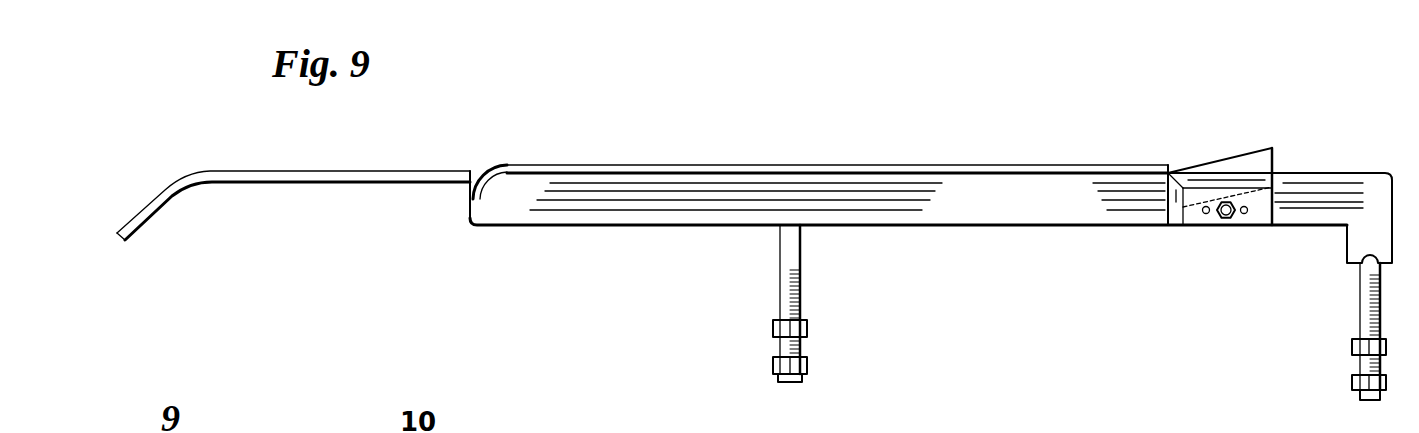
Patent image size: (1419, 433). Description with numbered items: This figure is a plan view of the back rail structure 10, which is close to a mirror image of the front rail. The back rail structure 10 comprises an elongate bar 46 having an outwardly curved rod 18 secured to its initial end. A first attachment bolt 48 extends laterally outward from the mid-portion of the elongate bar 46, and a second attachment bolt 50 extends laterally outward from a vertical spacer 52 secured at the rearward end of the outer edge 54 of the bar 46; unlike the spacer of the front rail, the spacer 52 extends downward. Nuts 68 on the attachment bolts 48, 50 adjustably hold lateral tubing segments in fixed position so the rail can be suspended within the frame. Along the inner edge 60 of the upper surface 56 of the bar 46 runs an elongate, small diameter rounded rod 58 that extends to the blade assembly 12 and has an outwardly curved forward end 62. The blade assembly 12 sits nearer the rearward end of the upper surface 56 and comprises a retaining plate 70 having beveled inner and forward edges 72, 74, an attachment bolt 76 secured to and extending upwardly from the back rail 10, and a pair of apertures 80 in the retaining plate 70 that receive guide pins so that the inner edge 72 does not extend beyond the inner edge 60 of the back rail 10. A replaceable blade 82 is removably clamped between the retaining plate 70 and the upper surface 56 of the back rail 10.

The back rail structure 10 is at (1003, 153).
The blade assembly 12 is at (1258, 197).
The outwardly curved rod 18 is at (263, 177).
The elongate bar 46 is at (943, 207).
The first attachment bolt 48 is at (795, 258).
The second attachment bolt 50 is at (1362, 302).
The vertical spacer 52 is at (1370, 245).
The outer edge 54 is at (695, 226).
The upper surface 56 is at (843, 200).
The rounded rod 58 is at (633, 167).
The inner edge 60 is at (723, 167).
The outwardly curved forward end 62 is at (476, 177).
The nut 68 is at (807, 332).
The retaining plate 70 is at (1193, 195).
The inner edge 72 is at (1165, 172).
The forward edge 74 is at (1178, 172).
The attachment bolt 76 is at (1217, 221).
The apertures 80 is at (1206, 214).
The replaceable blade 82 is at (1250, 155).